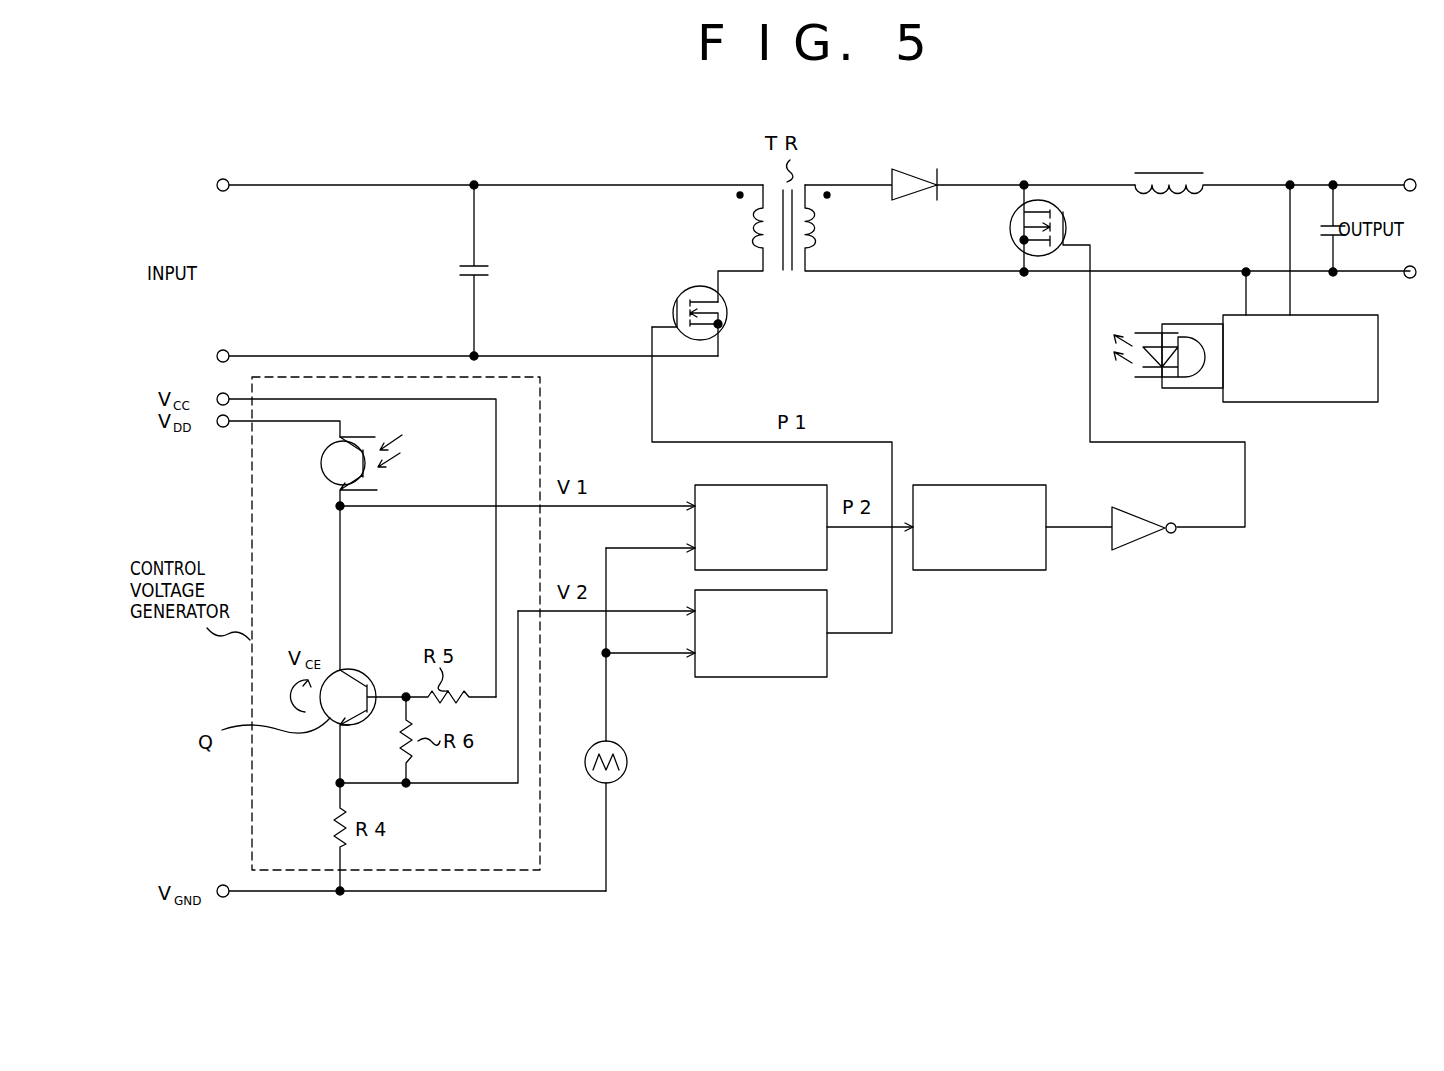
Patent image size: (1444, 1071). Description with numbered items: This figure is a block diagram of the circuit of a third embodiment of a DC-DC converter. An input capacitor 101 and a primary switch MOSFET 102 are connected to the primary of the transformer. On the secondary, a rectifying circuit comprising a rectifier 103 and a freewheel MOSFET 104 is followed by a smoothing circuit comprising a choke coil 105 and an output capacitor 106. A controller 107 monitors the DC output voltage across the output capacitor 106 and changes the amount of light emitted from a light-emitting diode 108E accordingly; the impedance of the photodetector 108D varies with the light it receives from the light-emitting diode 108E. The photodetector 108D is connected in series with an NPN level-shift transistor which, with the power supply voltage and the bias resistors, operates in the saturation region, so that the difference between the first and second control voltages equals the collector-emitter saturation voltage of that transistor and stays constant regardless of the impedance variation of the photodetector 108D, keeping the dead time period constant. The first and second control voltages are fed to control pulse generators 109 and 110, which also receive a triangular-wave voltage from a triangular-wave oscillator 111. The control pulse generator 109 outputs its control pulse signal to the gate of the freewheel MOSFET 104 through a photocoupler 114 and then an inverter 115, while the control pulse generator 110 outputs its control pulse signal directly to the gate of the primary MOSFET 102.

The input capacitor 101 is at (525, 264).
The primary switch MOSFET 102 is at (757, 307).
The rectifier 103 is at (927, 168).
The freewheel MOSFET 104 is at (1110, 220).
The choke coil 105 is at (1205, 182).
The output capacitor 106 is at (1347, 222).
The controller 107 is at (1312, 403).
The photodetector 108D is at (322, 470).
The light-emitting diode 108E is at (1150, 380).
The control pulse generator 109 is at (735, 484).
The control pulse generator 110 is at (762, 678).
The triangular-wave oscillator 111 is at (627, 768).
The photocoupler 114 is at (985, 571).
The inverter 115 is at (1137, 546).